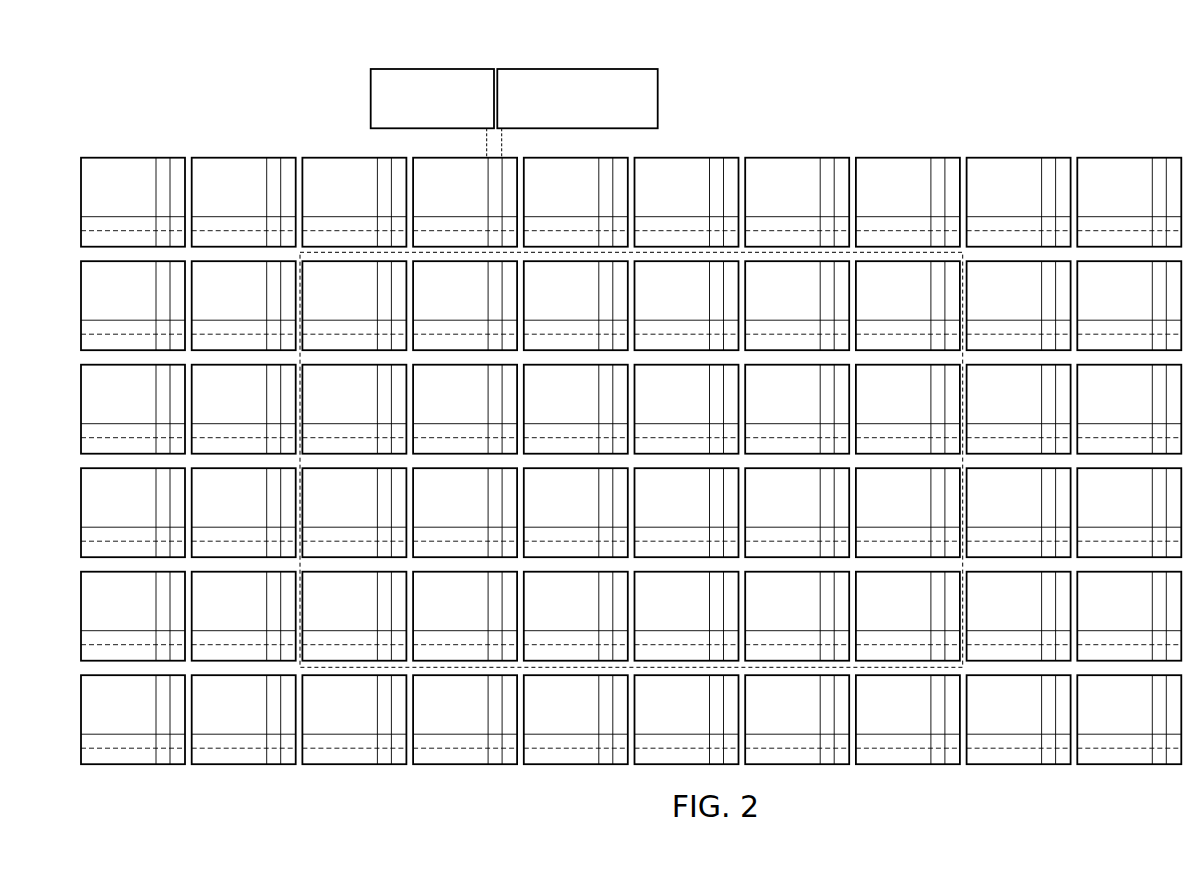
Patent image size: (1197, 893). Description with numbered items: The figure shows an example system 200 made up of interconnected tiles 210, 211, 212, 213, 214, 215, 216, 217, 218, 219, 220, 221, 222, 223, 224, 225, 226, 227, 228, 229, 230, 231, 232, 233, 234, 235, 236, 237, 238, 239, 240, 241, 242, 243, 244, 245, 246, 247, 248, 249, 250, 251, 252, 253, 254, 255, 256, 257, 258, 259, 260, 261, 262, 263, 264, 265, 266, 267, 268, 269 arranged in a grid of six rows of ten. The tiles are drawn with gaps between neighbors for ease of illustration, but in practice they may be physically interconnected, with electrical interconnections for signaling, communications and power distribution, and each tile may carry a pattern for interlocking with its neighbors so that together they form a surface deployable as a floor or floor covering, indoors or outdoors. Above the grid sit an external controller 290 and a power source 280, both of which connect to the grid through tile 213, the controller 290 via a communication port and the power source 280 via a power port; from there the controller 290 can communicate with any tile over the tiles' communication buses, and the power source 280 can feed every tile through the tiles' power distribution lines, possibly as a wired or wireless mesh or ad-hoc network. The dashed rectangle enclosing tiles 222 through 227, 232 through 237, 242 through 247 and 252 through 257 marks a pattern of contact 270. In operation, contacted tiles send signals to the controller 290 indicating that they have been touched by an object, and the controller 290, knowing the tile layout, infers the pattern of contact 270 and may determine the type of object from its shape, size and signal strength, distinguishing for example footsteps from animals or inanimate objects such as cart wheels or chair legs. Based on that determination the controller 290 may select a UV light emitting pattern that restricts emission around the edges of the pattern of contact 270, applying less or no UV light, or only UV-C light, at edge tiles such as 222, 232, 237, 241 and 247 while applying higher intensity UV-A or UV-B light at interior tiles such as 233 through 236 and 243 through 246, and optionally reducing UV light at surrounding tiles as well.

The system 200 is at (110, 84).
The tile 210 is at (115, 186).
The tile 211 is at (226, 186).
The tile 212 is at (336, 186).
The tile 213 is at (447, 186).
The tile 214 is at (558, 186).
The tile 215 is at (668, 186).
The tile 216 is at (779, 186).
The tile 217 is at (890, 186).
The tile 218 is at (1001, 186).
The tile 219 is at (1111, 186).
The tile 220 is at (115, 289).
The tile 221 is at (226, 289).
The tile 222 is at (336, 289).
The tile 223 is at (447, 289).
The tile 224 is at (558, 289).
The tile 225 is at (668, 289).
The tile 226 is at (779, 289).
The tile 227 is at (890, 289).
The tile 228 is at (1001, 289).
The tile 229 is at (1111, 289).
The tile 230 is at (115, 392).
The tile 231 is at (226, 392).
The tile 232 is at (336, 392).
The tile 233 is at (447, 392).
The tile 234 is at (558, 392).
The tile 235 is at (668, 392).
The tile 236 is at (779, 392).
The tile 237 is at (890, 392).
The tile 238 is at (1001, 392).
The tile 239 is at (1111, 392).
The tile 240 is at (115, 496).
The tile 241 is at (226, 496).
The tile 242 is at (336, 496).
The tile 243 is at (447, 496).
The tile 244 is at (558, 496).
The tile 245 is at (668, 496).
The tile 246 is at (779, 496).
The tile 247 is at (890, 496).
The tile 248 is at (1001, 496).
The tile 249 is at (1111, 496).
The tile 250 is at (115, 600).
The tile 251 is at (226, 600).
The tile 252 is at (336, 600).
The tile 253 is at (447, 600).
The tile 254 is at (558, 600).
The tile 255 is at (668, 600).
The tile 256 is at (779, 600).
The tile 257 is at (890, 600).
The tile 258 is at (1001, 600).
The tile 259 is at (1111, 600).
The tile 260 is at (115, 703).
The tile 261 is at (226, 703).
The tile 262 is at (336, 703).
The tile 263 is at (447, 703).
The tile 264 is at (558, 703).
The tile 265 is at (668, 703).
The tile 266 is at (779, 703).
The tile 267 is at (890, 703).
The tile 268 is at (1001, 703).
The tile 269 is at (1111, 703).
The pattern of contact 270 is at (812, 253).
The power source 280 is at (592, 120).
The controller 290 is at (418, 120).